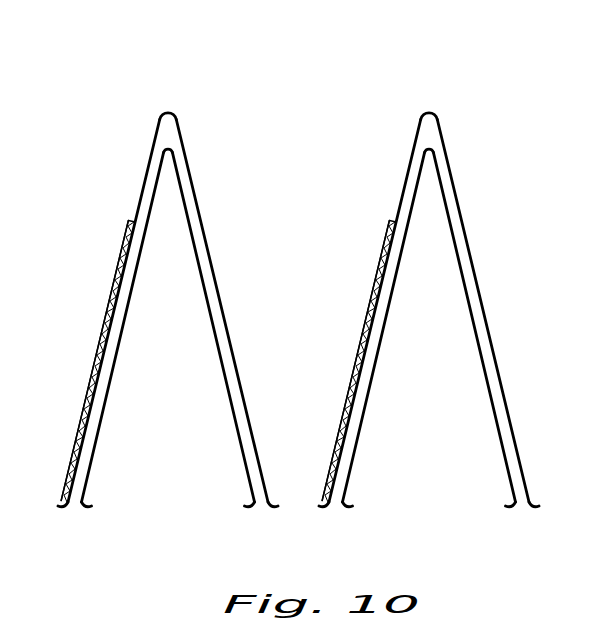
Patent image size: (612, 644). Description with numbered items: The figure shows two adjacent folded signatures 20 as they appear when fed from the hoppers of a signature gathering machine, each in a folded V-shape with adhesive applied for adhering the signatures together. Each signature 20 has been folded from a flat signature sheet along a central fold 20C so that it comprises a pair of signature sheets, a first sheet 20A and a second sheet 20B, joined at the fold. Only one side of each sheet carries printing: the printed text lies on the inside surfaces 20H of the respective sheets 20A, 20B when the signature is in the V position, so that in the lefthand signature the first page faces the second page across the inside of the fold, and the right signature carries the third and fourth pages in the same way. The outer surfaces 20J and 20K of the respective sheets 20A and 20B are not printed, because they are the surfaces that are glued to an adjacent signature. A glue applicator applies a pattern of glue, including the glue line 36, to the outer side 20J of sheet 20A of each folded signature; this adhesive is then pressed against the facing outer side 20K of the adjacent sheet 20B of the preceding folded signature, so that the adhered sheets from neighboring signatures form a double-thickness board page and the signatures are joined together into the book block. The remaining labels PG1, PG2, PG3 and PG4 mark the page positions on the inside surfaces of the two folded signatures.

The signature 20 is at (211, 150).
The central fold 20C is at (168, 111).
The outer surface of signature sheet 20J is at (143, 177).
The outer surface of signature sheet 20K is at (197, 192).
The signature sheet 20B is at (197, 220).
The inner left panel guide PG1 is at (125, 310).
The inner right panel guide PG2 is at (222, 367).
The inner left panel guide (second body) PG3 is at (386, 310).
The inner right panel guide (second body) PG4 is at (483, 367).
The inside surface of signature sheet 20H is at (100, 420).
The glue line 36 is at (117, 273).
The signature sheet 20A is at (93, 294).